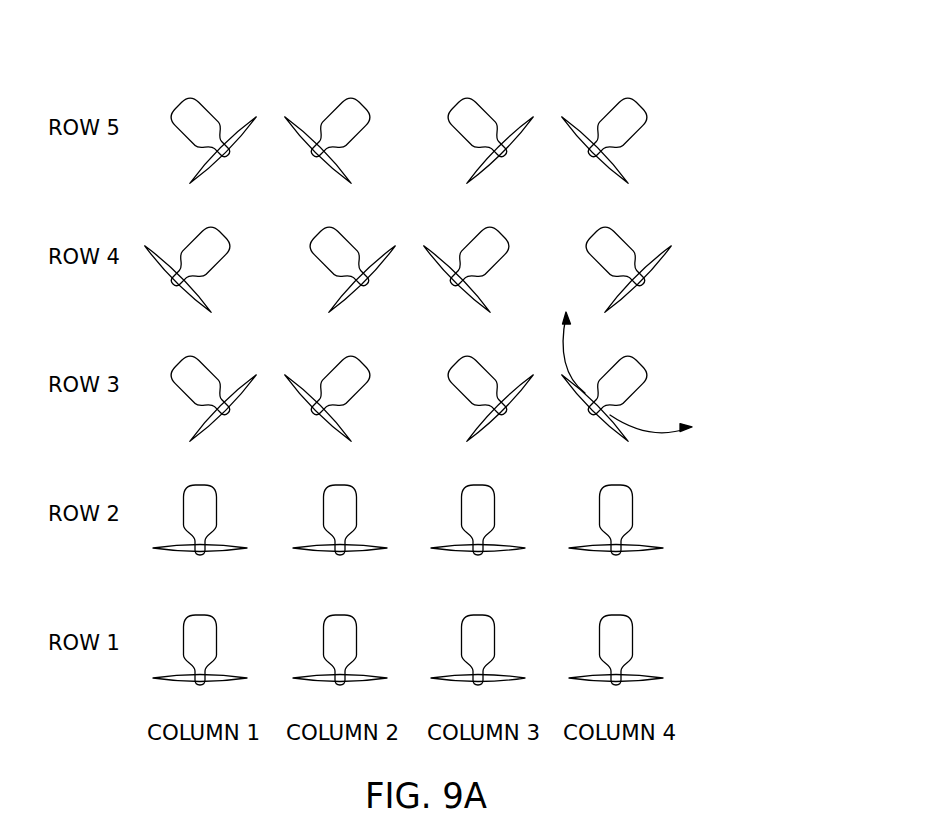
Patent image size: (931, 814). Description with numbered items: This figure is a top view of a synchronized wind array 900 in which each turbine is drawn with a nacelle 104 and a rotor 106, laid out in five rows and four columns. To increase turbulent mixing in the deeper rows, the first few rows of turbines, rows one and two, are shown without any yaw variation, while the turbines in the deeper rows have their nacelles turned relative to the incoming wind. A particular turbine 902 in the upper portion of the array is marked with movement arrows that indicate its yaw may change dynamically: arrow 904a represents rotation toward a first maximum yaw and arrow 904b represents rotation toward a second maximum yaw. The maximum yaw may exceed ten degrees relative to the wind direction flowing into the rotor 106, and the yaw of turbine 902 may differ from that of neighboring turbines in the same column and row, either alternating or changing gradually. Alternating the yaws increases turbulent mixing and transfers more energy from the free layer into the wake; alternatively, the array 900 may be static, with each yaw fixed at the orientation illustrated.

The array 900 is at (593, 84).
The nacelle 104 is at (630, 117).
The rotor 106 is at (553, 110).
The turbine 902 is at (646, 359).
The arrow 904a is at (576, 357).
The arrow 904b is at (645, 432).